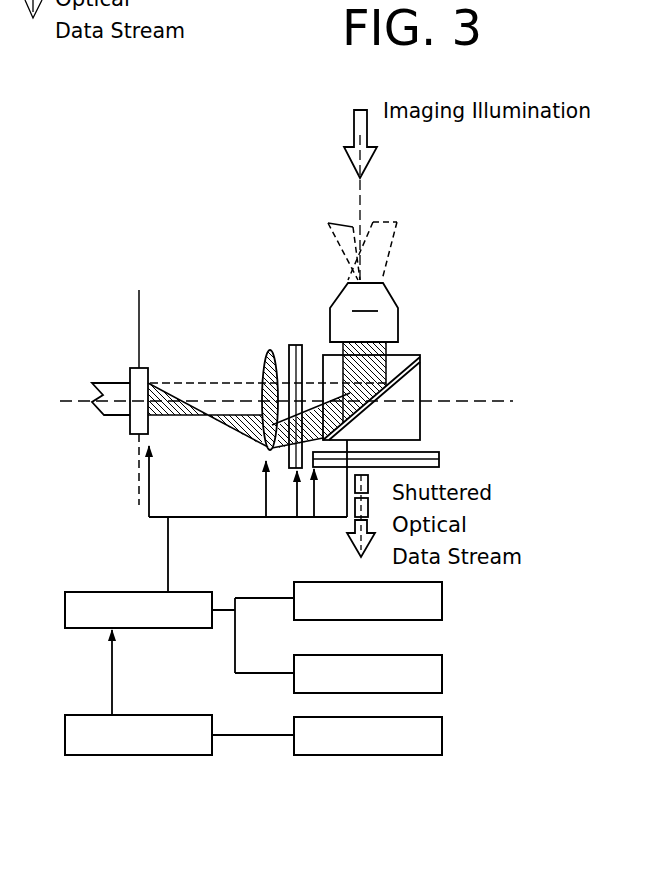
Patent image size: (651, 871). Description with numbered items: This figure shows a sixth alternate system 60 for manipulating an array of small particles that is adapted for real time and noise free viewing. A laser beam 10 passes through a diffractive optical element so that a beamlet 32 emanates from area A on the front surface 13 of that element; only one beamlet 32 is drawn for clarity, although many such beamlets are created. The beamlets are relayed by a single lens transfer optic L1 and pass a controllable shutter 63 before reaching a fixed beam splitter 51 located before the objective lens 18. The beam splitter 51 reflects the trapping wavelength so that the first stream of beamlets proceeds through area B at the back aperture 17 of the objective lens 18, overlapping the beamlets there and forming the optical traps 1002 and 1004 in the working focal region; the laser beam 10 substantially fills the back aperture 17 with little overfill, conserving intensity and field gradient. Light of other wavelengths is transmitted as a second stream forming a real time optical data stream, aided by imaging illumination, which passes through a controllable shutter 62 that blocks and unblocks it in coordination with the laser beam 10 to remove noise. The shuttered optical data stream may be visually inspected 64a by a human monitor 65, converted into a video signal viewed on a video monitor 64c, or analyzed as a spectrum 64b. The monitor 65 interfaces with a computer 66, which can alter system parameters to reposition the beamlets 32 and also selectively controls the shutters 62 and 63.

The laser beam 10 is at (105, 416).
The front surface 13 is at (142, 368).
The beamlet 32 is at (178, 417).
The single lens transfer optic L1 is at (262, 354).
The shutter 63 is at (293, 345).
The imaging head assembly 60 is at (250, 264).
The area A is at (128, 377).
The area B is at (360, 350).
The optical trap 1002 is at (330, 222).
The optical trap 1004 is at (400, 228).
The objective lens 18 is at (364, 312).
The back aperture 17 is at (398, 350).
The beam splitter 51 is at (408, 386).
The shutter 62 is at (440, 457).
The computer 66 is at (65, 606).
The human monitor 65 is at (65, 731).
The video monitor 64c is at (442, 604).
The spectrum 64b is at (442, 679).
The visual inspection 64a is at (442, 741).